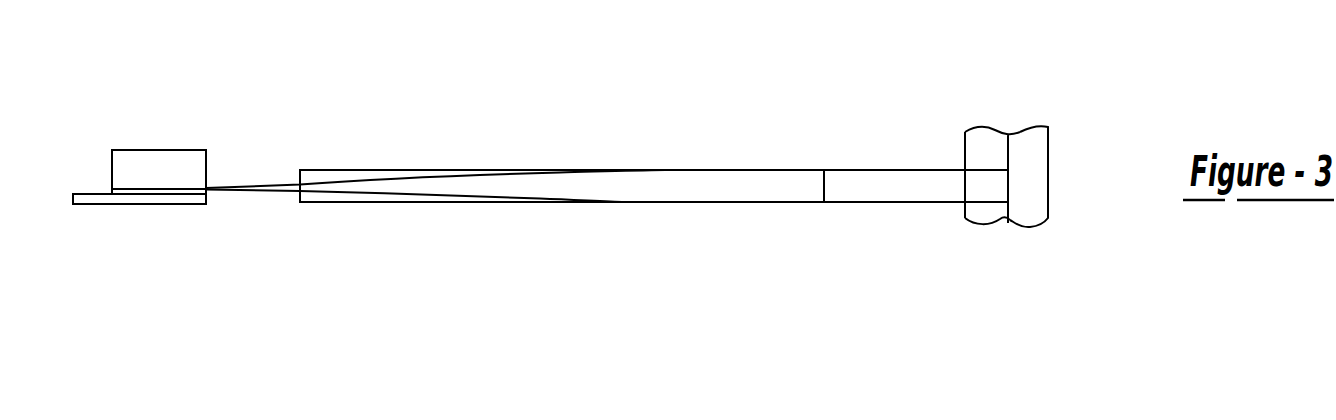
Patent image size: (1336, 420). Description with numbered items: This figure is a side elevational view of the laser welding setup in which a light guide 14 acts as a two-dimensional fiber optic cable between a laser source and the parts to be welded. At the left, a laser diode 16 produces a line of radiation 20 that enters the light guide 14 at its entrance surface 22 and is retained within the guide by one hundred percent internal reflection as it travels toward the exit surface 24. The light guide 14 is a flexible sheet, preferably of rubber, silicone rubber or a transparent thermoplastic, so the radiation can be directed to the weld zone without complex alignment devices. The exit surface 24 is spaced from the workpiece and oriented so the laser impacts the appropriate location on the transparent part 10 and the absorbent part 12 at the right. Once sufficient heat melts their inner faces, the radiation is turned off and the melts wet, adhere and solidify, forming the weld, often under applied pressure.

The transparent part 10 is at (987, 145).
The absorbent part 12 is at (1030, 158).
The light guide 14 is at (452, 170).
The laser diode 16 is at (153, 150).
The line of radiation 20 is at (260, 187).
The entrance surface 22 is at (300, 197).
The exit surface 24 is at (827, 187).